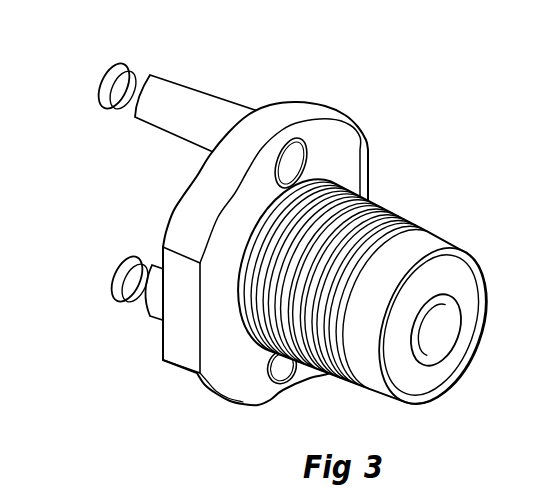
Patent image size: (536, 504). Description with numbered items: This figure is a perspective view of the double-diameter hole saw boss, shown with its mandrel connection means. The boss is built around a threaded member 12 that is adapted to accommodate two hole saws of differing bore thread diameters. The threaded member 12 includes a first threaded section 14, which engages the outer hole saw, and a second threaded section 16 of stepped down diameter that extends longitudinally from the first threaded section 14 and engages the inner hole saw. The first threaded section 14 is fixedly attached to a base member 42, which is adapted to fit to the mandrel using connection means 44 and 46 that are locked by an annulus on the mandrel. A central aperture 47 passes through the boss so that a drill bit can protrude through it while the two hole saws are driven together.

The threaded member 12 is at (287, 249).
The first threaded section 14 is at (378, 129).
The second threaded section 16 is at (374, 319).
The base member 42 is at (292, 221).
The connection means 44 is at (155, 307).
The connection means 46 is at (173, 113).
The central aperture 47 is at (438, 328).